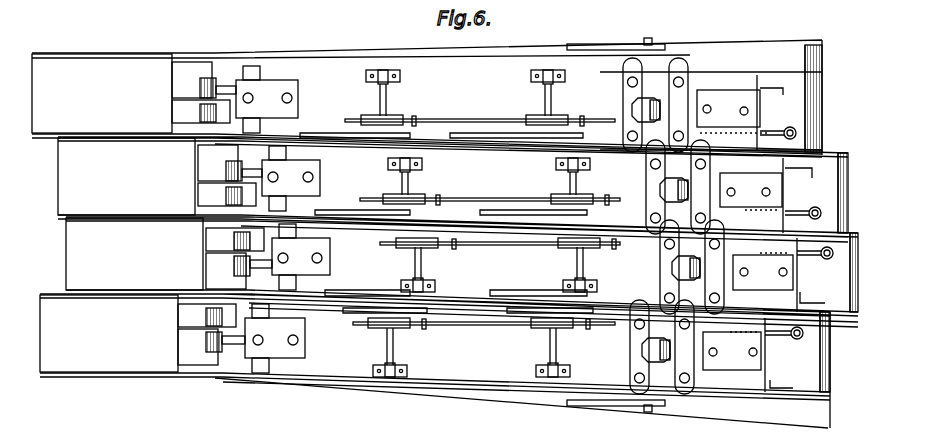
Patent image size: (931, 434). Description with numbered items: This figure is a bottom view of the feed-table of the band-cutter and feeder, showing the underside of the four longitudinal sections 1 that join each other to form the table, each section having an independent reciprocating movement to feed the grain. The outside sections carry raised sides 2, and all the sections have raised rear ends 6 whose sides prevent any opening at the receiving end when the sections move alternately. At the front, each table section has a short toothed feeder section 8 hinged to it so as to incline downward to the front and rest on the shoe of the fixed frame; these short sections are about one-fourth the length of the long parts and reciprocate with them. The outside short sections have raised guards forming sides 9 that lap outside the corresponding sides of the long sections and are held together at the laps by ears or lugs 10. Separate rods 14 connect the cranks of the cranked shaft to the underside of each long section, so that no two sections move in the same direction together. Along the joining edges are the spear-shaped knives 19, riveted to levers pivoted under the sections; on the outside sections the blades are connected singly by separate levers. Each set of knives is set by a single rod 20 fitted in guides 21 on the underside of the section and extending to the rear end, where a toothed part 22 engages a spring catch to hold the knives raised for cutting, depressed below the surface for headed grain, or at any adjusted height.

The longitudinal section 1 is at (536, 243).
The raised side 2 is at (522, 231).
The raised rear end 6 is at (730, 218).
The short toothed feeder section 8 is at (117, 213).
The side 9 is at (445, 217).
The ear or lug 10 is at (251, 217).
The rod 14 is at (673, 226).
The knife 19 is at (518, 128).
The rod 20 is at (493, 228).
The guide 21 is at (484, 223).
The toothed part 22 is at (745, 230).